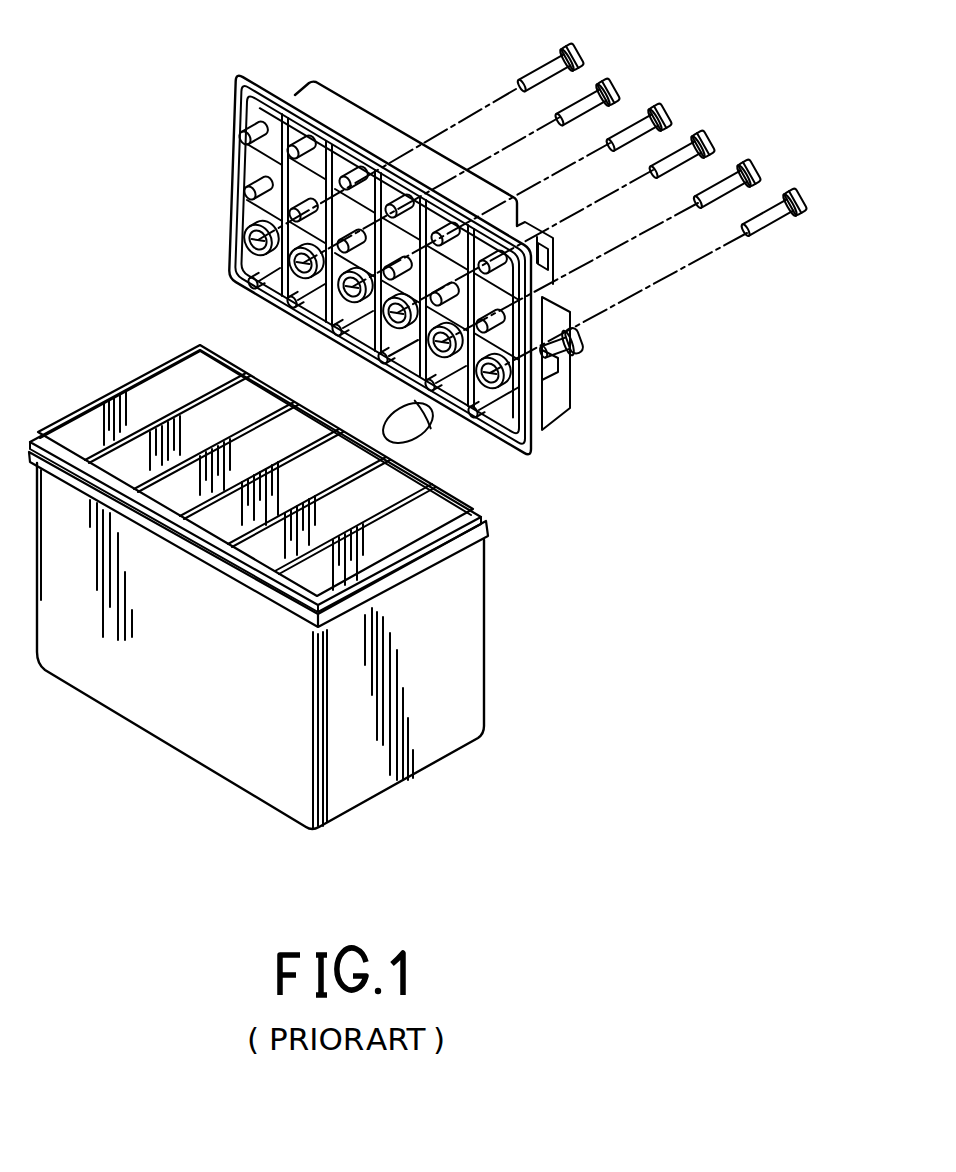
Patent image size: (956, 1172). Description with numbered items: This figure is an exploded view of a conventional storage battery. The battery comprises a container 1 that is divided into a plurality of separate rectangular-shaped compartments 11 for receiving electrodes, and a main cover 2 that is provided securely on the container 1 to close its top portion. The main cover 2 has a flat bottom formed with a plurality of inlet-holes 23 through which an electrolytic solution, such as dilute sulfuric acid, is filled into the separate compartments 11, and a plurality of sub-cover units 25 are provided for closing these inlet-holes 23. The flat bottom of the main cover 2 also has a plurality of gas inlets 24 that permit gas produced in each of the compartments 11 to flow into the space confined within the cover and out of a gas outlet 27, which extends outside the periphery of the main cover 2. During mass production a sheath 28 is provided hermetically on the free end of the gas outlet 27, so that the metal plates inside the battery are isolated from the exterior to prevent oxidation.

The container 1 is at (473, 663).
The compartments 11 is at (137, 392).
The main cover 2 is at (236, 270).
The inlet-holes 23 is at (250, 228).
The gas inlets 24 is at (250, 194).
The sub-cover units 25 is at (657, 100).
The gas outlet 27 is at (580, 357).
The sheath 28 is at (433, 443).